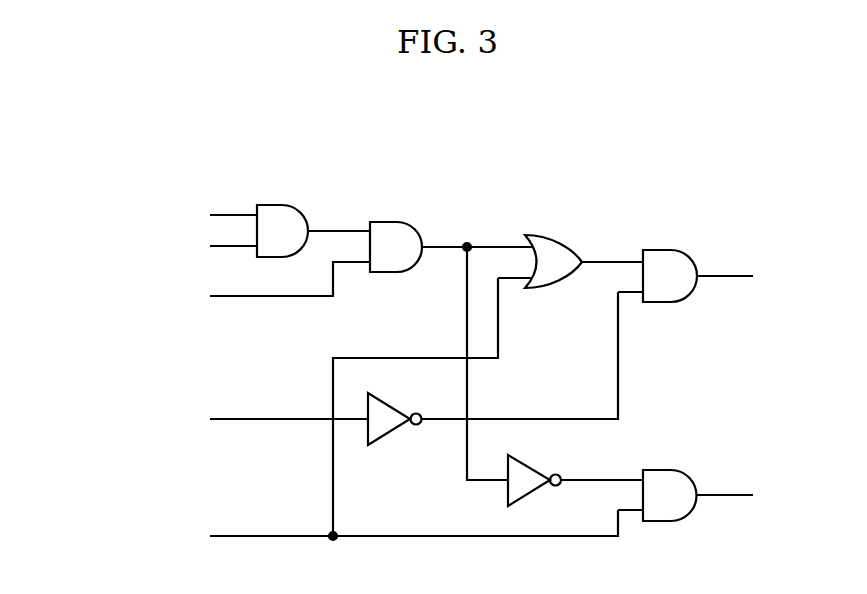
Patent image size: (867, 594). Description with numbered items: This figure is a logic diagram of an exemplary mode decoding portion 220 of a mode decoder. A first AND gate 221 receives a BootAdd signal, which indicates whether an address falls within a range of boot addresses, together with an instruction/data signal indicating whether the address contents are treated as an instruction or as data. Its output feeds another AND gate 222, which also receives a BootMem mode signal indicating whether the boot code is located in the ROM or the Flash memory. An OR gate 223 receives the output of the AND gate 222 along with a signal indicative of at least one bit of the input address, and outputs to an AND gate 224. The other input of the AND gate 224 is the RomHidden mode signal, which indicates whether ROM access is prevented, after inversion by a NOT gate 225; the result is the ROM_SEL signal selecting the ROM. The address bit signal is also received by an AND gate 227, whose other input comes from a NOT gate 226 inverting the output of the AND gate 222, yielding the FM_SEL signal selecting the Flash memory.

The mode decoding portion 220 is at (709, 172).
The first AND gate 221 is at (280, 205).
The AND gate 222 is at (393, 221).
The OR gate 223 is at (552, 234).
The AND gate 224 is at (665, 250).
The NOT gate 225 is at (390, 404).
The NOT gate 226 is at (532, 465).
The AND gate 227 is at (665, 470).